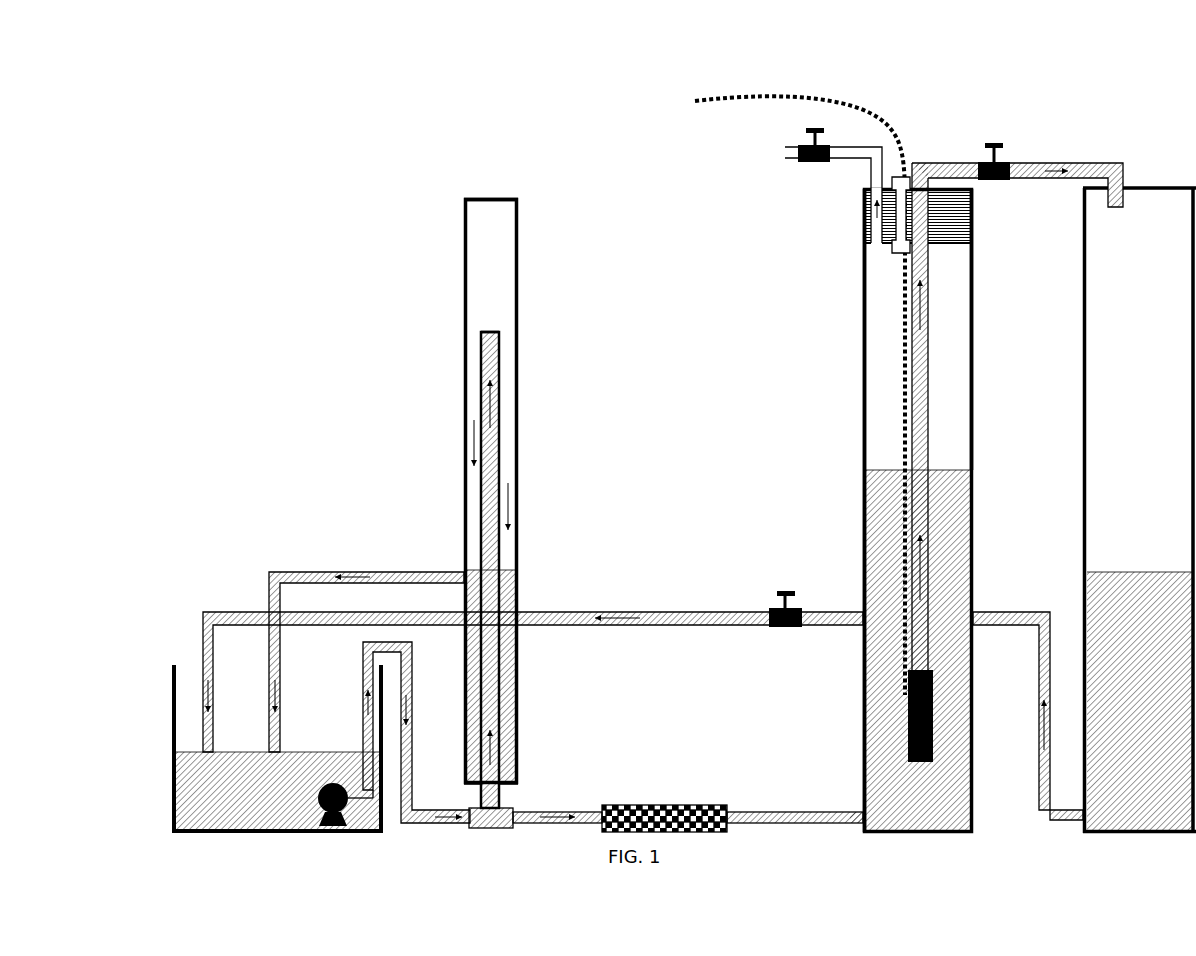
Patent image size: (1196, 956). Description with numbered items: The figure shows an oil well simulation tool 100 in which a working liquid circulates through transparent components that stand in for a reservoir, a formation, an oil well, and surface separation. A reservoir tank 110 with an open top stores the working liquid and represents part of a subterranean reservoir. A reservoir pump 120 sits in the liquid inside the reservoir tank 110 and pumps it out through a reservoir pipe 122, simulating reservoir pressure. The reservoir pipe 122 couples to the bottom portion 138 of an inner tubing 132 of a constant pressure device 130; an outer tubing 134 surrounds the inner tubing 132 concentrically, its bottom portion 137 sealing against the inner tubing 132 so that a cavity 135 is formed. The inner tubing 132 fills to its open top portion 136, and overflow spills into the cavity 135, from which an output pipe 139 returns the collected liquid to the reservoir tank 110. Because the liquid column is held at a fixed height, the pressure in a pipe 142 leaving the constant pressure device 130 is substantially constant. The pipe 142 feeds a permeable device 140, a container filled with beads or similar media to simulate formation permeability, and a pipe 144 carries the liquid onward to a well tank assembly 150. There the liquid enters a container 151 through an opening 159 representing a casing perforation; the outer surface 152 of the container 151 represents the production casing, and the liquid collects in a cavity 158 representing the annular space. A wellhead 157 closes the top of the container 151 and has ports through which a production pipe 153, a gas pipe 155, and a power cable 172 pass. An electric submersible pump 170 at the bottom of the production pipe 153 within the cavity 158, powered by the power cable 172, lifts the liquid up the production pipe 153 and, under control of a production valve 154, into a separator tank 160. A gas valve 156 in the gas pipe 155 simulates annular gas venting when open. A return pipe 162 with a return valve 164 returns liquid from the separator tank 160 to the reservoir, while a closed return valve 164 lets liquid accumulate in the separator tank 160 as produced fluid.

The oil well simulation tool 100 is at (303, 157).
The reservoir tank 110 is at (193, 763).
The reservoir pump 120 is at (311, 816).
The reservoir pipe 122 is at (357, 681).
The constant pressure device 130 is at (456, 204).
The inner tubing 132 is at (491, 471).
The outer tubing 134 is at (462, 403).
The cavity 135 is at (498, 235).
The top portion 136 is at (500, 331).
The bottom portion 137 is at (520, 777).
The bottom portion 138 is at (468, 795).
The output pipe 139 is at (321, 565).
The permeable device 140 is at (661, 803).
The pipe 142 is at (568, 810).
The pipe 144 is at (765, 811).
The well tank assembly 150 is at (829, 288).
The container 151 is at (858, 456).
The outer surface 152 is at (861, 382).
The production pipe 153 is at (930, 423).
The production valve 154 is at (1011, 163).
The gas pipe 155 is at (873, 152).
The gas valve 156 is at (796, 163).
The wellhead 157 is at (976, 236).
The cavity 158 is at (955, 366).
The opening 159 is at (861, 810).
The separator tank 160 is at (1160, 182).
The return pipe 162 is at (1024, 612).
The return valve 164 is at (768, 607).
The electric submersible pump 170 is at (899, 714).
The power cable 172 is at (902, 364).